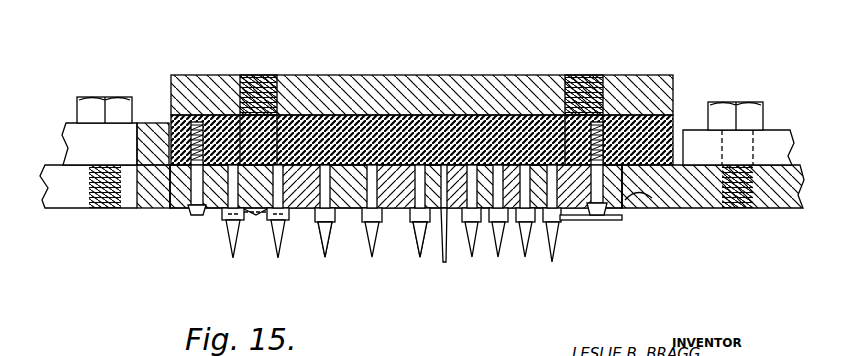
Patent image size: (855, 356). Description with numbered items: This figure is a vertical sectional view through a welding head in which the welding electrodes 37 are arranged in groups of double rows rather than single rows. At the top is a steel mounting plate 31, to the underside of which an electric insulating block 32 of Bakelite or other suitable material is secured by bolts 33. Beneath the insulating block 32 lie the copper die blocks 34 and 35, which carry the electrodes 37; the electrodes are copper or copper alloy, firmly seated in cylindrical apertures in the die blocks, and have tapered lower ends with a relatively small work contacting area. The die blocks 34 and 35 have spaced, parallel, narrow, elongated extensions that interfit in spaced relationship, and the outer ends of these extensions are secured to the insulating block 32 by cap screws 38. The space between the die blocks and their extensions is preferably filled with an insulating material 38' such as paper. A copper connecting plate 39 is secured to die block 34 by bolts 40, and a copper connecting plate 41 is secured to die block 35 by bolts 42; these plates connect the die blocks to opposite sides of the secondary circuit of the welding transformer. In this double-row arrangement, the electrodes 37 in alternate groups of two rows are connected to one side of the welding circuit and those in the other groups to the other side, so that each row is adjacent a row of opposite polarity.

The steel mounting plate 31 is at (400, 74).
The electric insulating block 32 is at (517, 125).
The bolts 33 is at (585, 75).
The die block 34 is at (122, 208).
The die block 35 is at (770, 210).
The welding electrodes 37 is at (418, 238).
The cap screws 38 is at (406, 193).
The insulating material 38' is at (567, 246).
The copper connecting plate 39 is at (77, 153).
The bolts 40 is at (86, 97).
The copper connecting plate 41 is at (694, 160).
The bolts 42 is at (750, 104).